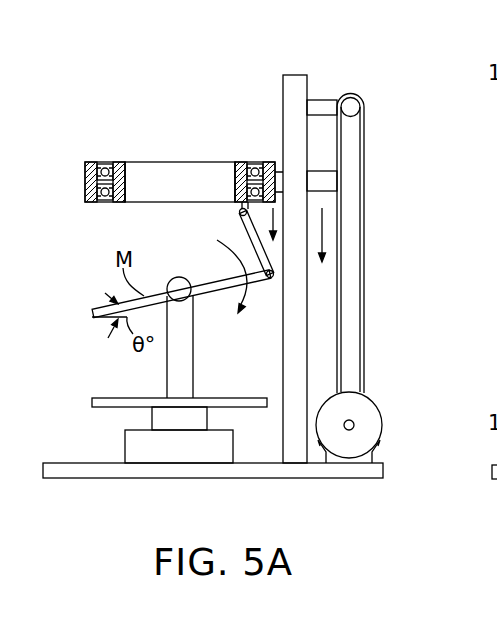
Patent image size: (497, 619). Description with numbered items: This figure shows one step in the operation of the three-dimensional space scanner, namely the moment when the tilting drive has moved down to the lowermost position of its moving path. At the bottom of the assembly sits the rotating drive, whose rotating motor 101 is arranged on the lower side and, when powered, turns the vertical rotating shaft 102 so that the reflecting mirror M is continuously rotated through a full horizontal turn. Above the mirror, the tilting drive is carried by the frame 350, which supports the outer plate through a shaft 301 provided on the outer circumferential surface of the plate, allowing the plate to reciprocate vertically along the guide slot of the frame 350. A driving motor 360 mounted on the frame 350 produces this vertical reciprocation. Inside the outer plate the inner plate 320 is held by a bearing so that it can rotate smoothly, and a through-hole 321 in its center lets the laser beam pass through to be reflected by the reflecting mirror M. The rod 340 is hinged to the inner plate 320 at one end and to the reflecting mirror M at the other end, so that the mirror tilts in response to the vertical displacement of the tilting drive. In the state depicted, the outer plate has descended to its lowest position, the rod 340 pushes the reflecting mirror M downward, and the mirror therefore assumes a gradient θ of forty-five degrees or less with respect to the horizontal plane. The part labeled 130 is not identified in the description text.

The rotating motor 101 is at (177, 480).
The vertical rotating shaft 102 is at (157, 422).
The bearing housing 130 is at (88, 163).
The inner plate 320 is at (117, 163).
The through-hole 321 is at (180, 168).
The rod 340 is at (272, 262).
The frame 350 is at (295, 80).
The shaft 301 is at (330, 180).
The driving motor 360 is at (375, 423).